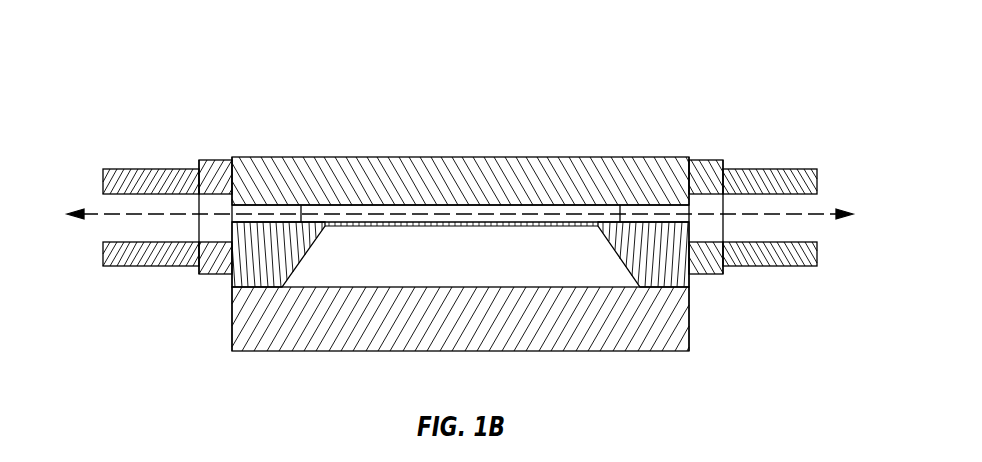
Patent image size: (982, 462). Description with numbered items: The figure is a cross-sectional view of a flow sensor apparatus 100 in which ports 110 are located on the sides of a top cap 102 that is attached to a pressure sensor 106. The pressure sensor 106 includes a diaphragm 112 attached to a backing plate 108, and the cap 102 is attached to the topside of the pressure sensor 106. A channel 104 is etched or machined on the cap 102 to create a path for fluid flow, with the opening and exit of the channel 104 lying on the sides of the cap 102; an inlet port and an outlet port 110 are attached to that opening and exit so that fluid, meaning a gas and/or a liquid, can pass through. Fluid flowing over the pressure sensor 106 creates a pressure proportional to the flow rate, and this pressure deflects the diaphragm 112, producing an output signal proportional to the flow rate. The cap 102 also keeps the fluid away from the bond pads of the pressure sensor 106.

The flow sensor apparatus 100 is at (675, 52).
The cap 102 is at (368, 157).
The channel 104 is at (465, 213).
The pressure sensor 106 is at (697, 313).
The backing plate 108 is at (473, 337).
The inlet port and outlet port 110 is at (148, 169).
The diaphragm 112 is at (500, 227).